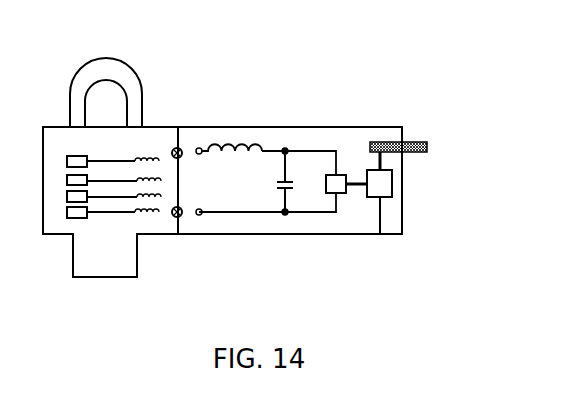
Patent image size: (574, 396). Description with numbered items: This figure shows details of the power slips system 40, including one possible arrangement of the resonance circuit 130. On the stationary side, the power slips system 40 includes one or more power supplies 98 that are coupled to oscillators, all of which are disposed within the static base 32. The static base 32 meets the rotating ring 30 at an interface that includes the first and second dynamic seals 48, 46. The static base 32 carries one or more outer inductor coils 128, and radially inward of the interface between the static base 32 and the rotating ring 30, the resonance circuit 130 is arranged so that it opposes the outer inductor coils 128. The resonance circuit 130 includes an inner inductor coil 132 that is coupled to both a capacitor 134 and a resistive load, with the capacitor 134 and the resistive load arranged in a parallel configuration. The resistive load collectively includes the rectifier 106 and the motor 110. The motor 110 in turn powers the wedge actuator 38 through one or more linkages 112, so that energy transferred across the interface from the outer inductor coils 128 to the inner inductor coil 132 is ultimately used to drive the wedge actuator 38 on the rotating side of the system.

The power slips system 40 is at (286, 52).
The static base 32 is at (62, 137).
The power supply 98 is at (76, 219).
The outer inductor coil 128 is at (157, 217).
The first dynamic seal 48 is at (174, 147).
The second dynamic seal 46 is at (177, 217).
The rotating ring 30 is at (351, 227).
The resonance circuit 130 is at (304, 146).
The inner inductor coil 132 is at (230, 145).
The capacitor 134 is at (268, 188).
The rectifier 106 is at (333, 175).
The motor 110 is at (378, 234).
The linkage 112 is at (378, 157).
The wedge actuator 38 is at (419, 142).